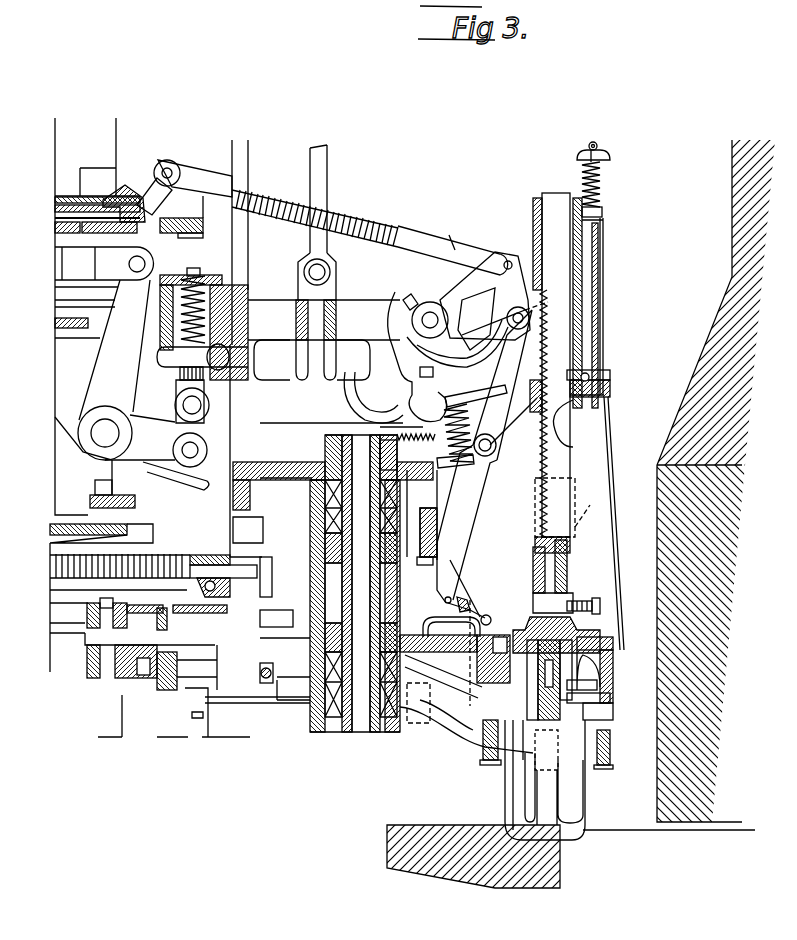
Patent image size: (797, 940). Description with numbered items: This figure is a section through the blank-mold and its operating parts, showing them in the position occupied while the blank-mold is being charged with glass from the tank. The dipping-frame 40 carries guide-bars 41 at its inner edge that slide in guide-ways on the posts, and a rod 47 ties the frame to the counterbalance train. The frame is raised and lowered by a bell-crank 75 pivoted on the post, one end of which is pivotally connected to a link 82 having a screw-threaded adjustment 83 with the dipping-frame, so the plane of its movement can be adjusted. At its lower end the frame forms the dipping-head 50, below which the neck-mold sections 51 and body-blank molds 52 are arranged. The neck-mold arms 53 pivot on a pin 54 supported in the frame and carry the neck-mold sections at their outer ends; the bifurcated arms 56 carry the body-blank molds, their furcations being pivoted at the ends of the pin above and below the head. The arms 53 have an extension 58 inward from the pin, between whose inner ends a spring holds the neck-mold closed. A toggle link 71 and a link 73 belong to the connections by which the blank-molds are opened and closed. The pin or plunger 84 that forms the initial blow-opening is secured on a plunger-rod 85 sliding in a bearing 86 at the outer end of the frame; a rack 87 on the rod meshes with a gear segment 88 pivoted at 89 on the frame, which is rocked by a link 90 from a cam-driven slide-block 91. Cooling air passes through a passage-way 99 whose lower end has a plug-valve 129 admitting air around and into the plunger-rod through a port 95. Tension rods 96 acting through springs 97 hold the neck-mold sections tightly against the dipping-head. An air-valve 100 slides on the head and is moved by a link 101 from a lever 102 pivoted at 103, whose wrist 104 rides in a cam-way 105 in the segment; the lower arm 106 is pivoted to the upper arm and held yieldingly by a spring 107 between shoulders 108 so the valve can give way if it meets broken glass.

The dipping-frame 40 is at (324, 320).
The guide-bars 41 is at (298, 263).
The rod 47 is at (327, 180).
The dipping-head 50 is at (600, 643).
The neck-mold sections 51 is at (597, 687).
The body-blank molds 52 is at (586, 786).
The neck-mold arms 53 is at (310, 683).
The pin 54 is at (370, 733).
The bifurcated arms 56 is at (313, 492).
The extension 58 is at (272, 692).
The toggle link 71 is at (245, 704).
The link 73 is at (132, 672).
The bell-crank 75 is at (132, 387).
The link 82 is at (175, 406).
The screw-threaded adjustment 83 is at (167, 323).
The pin or plunger 84 is at (624, 738).
The plunger-rod 85 is at (567, 572).
The bearing 86 is at (540, 214).
The rack 87 is at (518, 486).
The gear segment 88 is at (528, 414).
The pivot 89 is at (431, 310).
The link 90 is at (467, 246).
The slide-block 91 is at (57, 206).
The port 95 is at (570, 443).
The tension rods 96 is at (613, 500).
The springs 97 is at (600, 198).
The passage-way 99 is at (588, 312).
The air-valve 100 is at (500, 628).
The link 101 is at (472, 617).
The lever 102 is at (503, 382).
The pivot 103 is at (492, 448).
The wrist 104 is at (512, 310).
The cam-way 105 is at (448, 357).
The lower arm 106 is at (467, 537).
The spring 107 is at (445, 442).
The shoulders 108 is at (478, 402).
The plug-valve 129 is at (610, 391).